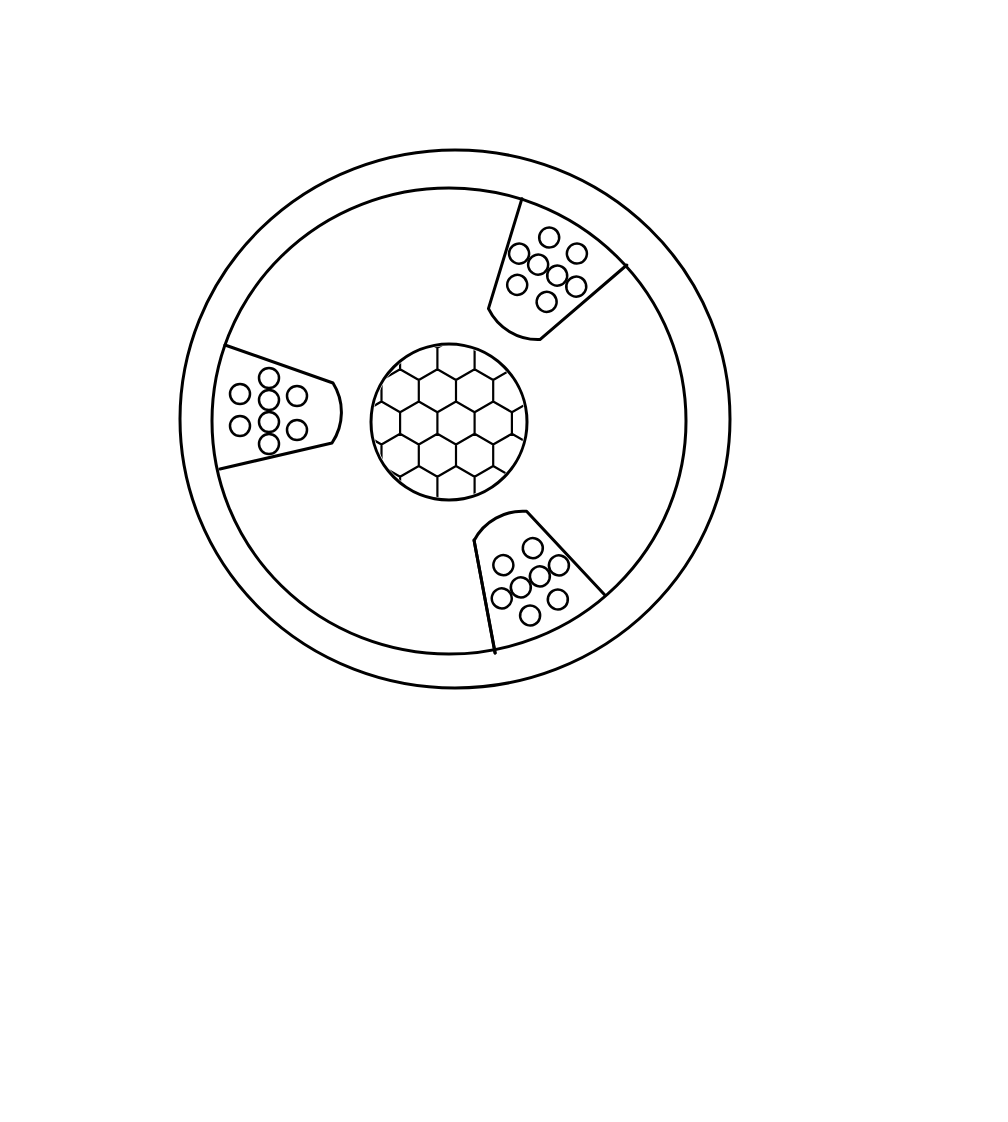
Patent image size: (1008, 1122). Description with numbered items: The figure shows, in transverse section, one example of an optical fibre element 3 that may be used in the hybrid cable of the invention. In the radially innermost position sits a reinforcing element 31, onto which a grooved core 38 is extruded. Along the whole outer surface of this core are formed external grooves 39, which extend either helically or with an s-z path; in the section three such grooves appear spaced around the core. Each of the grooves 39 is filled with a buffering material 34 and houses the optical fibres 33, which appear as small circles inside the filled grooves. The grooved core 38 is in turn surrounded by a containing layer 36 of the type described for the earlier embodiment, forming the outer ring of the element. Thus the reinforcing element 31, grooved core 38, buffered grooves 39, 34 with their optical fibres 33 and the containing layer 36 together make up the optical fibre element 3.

The optical fibre element 3 is at (467, 148).
The reinforcing element 31 is at (513, 400).
The optical fibres 33 is at (533, 615).
The buffering material 34 is at (585, 592).
The containing layer 36 is at (220, 522).
The grooved core 38 is at (662, 390).
The external grooves 39 is at (483, 617).